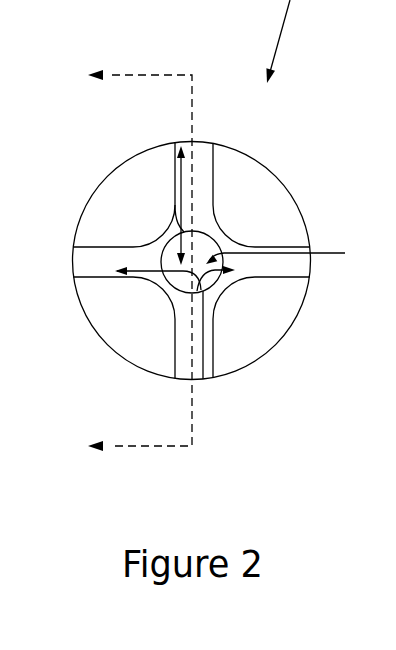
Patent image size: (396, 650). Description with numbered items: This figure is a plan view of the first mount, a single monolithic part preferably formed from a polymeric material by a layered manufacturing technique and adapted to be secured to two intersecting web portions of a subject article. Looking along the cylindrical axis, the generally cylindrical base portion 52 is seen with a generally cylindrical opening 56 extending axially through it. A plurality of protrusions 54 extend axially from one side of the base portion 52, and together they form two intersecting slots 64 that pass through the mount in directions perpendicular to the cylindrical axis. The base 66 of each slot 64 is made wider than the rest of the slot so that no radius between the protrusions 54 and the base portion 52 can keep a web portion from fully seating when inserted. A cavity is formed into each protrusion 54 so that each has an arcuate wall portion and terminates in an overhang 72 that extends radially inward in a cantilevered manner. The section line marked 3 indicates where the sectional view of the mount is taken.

The section line 3- 3 is at (130, 262).
The base portion 52 is at (85, 263).
The protrusions 54 is at (127, 184).
The cylindrical opening 56 is at (293, 255).
The slots 64 is at (176, 207).
The base of slot 66 is at (82, 257).
The overhang 72 is at (108, 227).